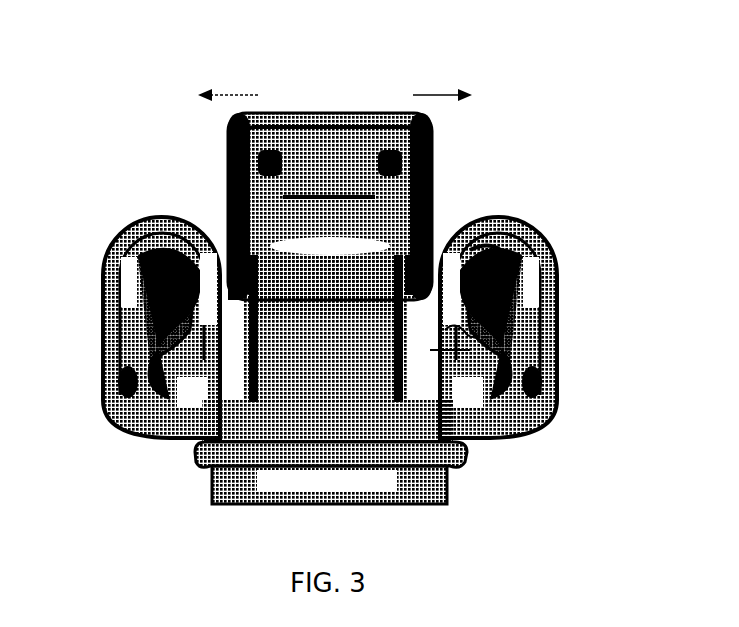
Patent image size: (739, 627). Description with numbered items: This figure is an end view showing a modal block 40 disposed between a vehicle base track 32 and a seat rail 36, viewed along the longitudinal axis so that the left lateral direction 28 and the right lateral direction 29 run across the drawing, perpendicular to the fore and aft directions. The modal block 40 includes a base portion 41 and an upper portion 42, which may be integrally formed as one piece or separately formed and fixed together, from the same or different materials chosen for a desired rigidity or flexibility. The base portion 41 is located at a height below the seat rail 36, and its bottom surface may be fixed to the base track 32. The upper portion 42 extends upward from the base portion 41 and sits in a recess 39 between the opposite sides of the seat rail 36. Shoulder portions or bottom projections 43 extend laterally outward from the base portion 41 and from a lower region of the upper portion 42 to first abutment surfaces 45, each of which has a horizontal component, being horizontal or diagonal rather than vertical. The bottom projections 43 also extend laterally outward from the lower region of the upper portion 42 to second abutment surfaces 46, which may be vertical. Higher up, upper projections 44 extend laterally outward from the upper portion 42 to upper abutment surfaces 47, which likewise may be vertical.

The left lateral direction 28 is at (233, 95).
The right lateral direction 29 is at (448, 95).
The base track 32 is at (185, 435).
The seat rail 36 is at (228, 217).
The recess 39 is at (276, 203).
The modal block 40 is at (340, 383).
The base portion 41 is at (340, 443).
The upper portion 42 is at (340, 300).
The bottom projections 43 is at (440, 385).
The upper projections 44 is at (407, 272).
The first abutment surfaces 45 is at (428, 350).
The second abutment surfaces 46 is at (440, 333).
The upper abutment surfaces 47 is at (412, 295).